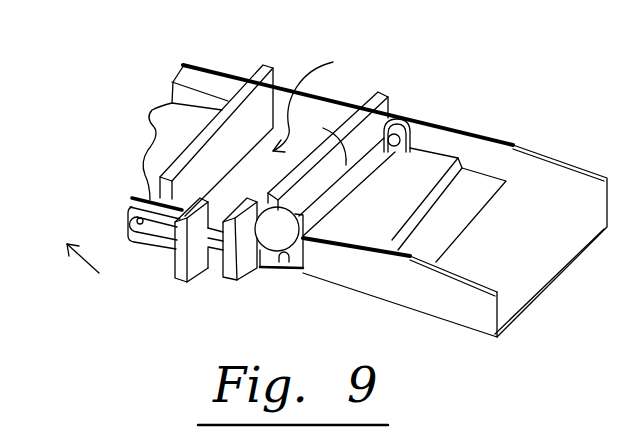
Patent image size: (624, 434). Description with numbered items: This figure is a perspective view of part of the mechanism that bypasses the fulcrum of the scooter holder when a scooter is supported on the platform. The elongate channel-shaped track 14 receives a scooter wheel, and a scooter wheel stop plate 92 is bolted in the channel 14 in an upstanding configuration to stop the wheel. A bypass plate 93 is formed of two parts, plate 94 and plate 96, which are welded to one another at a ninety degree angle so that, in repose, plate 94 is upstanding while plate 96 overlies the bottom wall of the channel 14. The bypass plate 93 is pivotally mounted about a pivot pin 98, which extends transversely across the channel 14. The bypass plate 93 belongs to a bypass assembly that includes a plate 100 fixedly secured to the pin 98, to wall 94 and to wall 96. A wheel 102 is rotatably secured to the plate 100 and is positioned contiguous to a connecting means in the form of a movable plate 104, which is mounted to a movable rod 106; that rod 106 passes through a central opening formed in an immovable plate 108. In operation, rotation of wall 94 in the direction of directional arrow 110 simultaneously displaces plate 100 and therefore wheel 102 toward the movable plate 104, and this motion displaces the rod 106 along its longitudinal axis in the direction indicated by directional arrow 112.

The channel-shaped track 14 is at (555, 150).
The scooter wheel stop plate 92 is at (172, 82).
The bypass plate 93 is at (387, 89).
The plate 94 is at (326, 196).
The plate 96 is at (429, 158).
The pivot pin 98 is at (352, 187).
The plate 100 is at (298, 270).
The wheel 102 is at (300, 240).
The movable plate 104 is at (244, 280).
The movable rod 106 is at (131, 208).
The immovable plate 108 is at (178, 282).
The directional arrow 110 is at (331, 103).
The directional arrow 112 is at (103, 276).